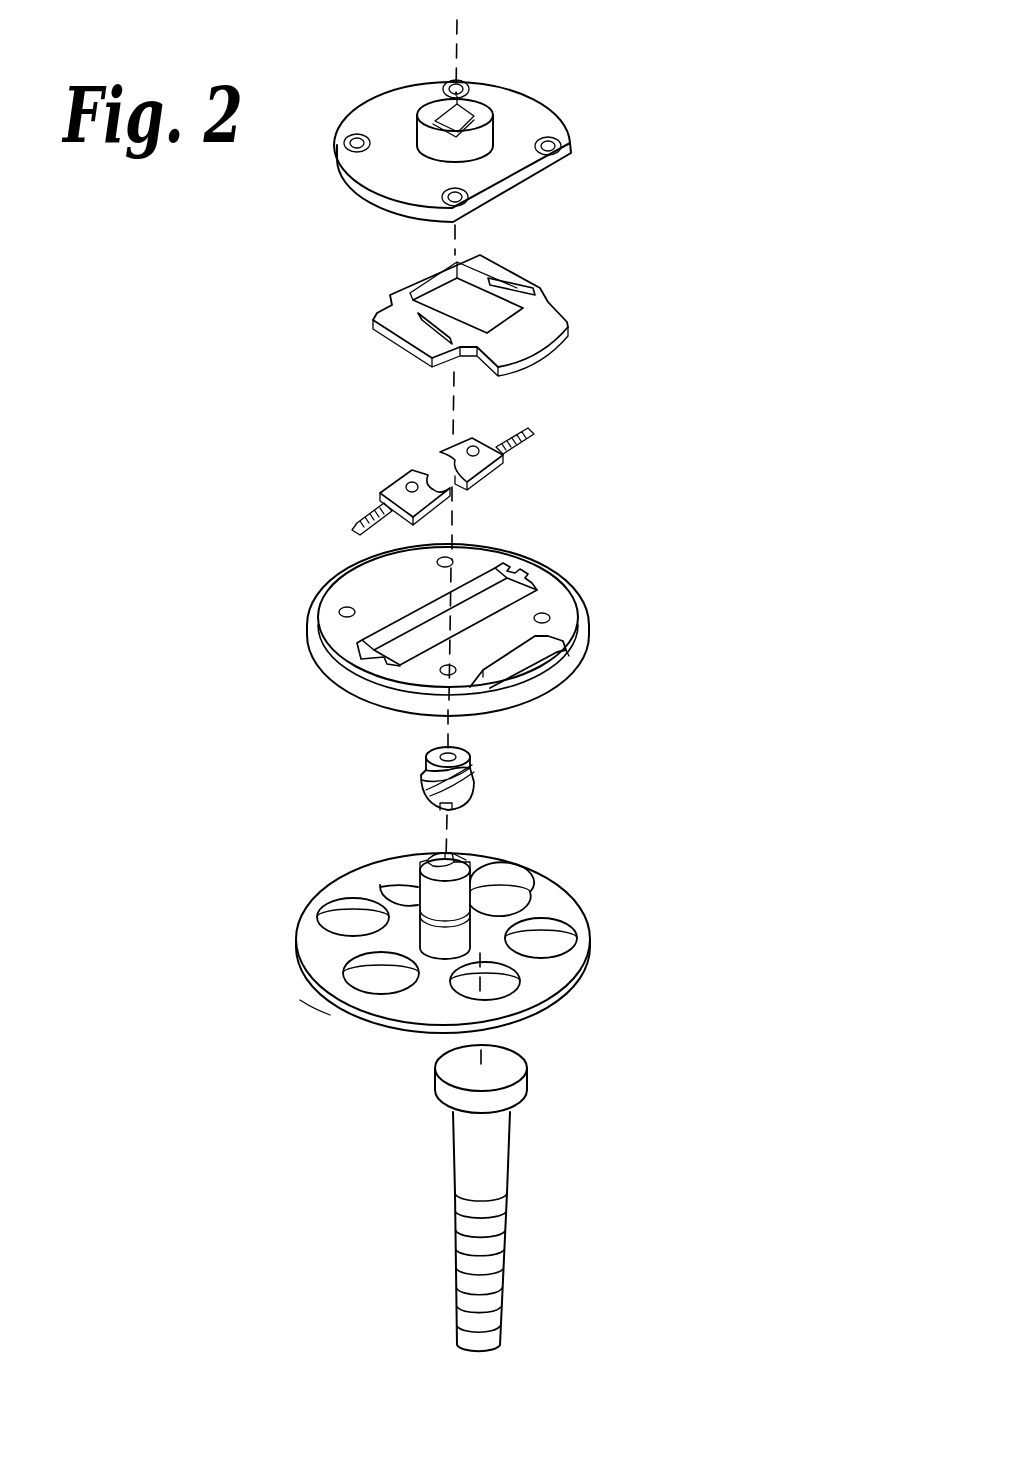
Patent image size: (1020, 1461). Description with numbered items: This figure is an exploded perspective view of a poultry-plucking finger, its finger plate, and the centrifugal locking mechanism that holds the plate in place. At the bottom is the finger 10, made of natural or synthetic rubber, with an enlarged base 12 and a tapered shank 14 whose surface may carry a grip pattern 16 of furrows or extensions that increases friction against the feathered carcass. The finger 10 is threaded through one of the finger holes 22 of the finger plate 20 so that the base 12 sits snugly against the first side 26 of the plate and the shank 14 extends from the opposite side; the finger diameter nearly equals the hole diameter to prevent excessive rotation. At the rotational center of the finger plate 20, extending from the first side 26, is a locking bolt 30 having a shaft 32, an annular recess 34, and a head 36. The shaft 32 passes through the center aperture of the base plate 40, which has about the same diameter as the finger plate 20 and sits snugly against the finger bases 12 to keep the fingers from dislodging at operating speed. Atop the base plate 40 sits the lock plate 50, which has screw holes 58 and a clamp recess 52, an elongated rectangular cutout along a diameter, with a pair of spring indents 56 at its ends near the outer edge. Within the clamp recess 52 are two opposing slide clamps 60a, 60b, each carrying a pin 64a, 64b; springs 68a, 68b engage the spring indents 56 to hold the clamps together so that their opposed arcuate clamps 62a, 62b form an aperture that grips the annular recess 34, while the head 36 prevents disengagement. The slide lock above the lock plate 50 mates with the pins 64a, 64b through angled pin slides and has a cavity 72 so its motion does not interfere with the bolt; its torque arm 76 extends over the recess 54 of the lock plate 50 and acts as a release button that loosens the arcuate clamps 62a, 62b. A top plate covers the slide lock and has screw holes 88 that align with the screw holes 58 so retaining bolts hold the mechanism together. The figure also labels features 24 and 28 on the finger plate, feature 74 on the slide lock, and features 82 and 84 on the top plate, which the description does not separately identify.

The finger 10 is at (477, 1198).
The enlarged base 12 is at (517, 1092).
The tapered shank 14 is at (498, 1179).
The grip pattern 16 is at (496, 1273).
The finger plate 20 is at (450, 941).
The finger holes 22 is at (519, 885).
The hub 24 is at (420, 892).
The first side 26 is at (549, 981).
The peripheral edge 28 is at (357, 1019).
The locking bolt 30 is at (441, 783).
The shaft 32 is at (465, 757).
The annular recess 34 is at (475, 787).
The head 36 is at (428, 800).
The base plate 40 is at (445, 625).
The lock plate 50 is at (557, 600).
The clamp recess 52 is at (372, 633).
The recess 54 is at (514, 650).
The spring indents 56 is at (505, 572).
The screw holes 58 is at (452, 559).
The slide clamp 60a is at (433, 445).
The slide clamp 60b is at (326, 498).
The arcuate clamp 62a is at (477, 478).
The arcuate clamp 62b is at (400, 513).
The pin 64a is at (470, 452).
The pin 64b is at (410, 484).
The spring 68a is at (533, 432).
The spring 68b is at (352, 521).
The cavity 72 is at (510, 297).
The spring finger 74 is at (543, 289).
The torque arm 76 is at (545, 329).
The hub 82 is at (475, 118).
The cap 84 is at (492, 116).
The screw holes 88 is at (562, 145).